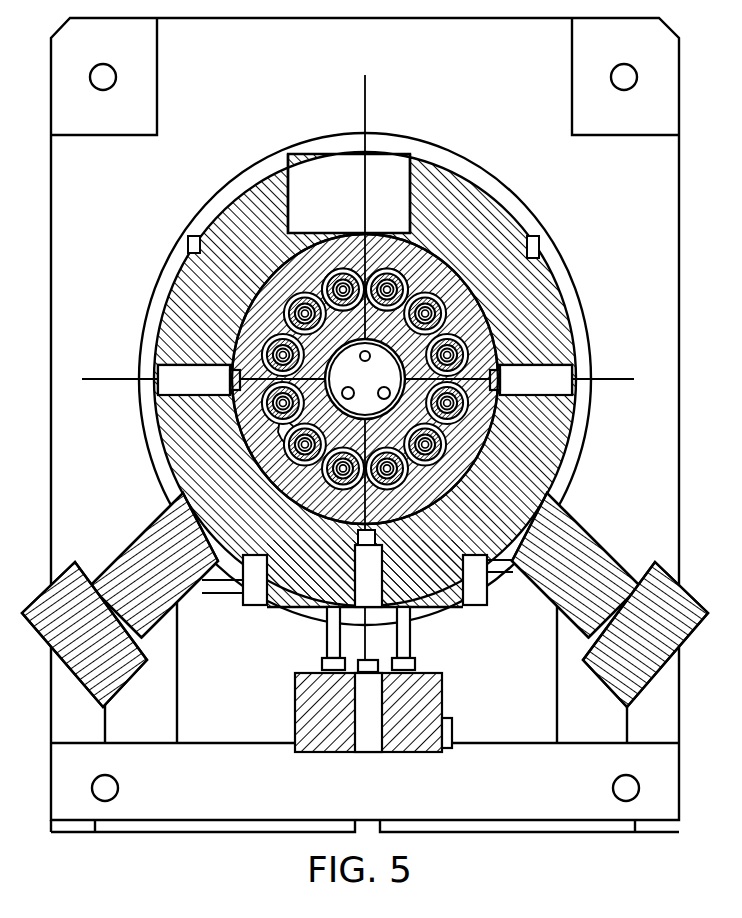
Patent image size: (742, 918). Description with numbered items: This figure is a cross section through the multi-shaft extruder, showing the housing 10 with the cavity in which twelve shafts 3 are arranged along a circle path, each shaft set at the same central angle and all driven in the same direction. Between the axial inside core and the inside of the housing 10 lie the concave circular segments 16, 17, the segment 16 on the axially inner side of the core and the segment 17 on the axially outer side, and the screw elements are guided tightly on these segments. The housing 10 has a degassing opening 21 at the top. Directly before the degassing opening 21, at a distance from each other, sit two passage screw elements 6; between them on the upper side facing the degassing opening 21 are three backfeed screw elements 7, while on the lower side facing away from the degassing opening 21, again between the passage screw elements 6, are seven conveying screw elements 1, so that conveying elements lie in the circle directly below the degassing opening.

The conveying screw elements 1 is at (280, 404).
The shafts 3 is at (560, 308).
The passage screw elements 6 is at (265, 358).
The backfeed screw elements 7 is at (395, 276).
The housing 10 is at (550, 442).
The concave circular segment 16 is at (285, 325).
The concave circular segment 17 is at (285, 438).
The degassing opening 21 is at (303, 186).